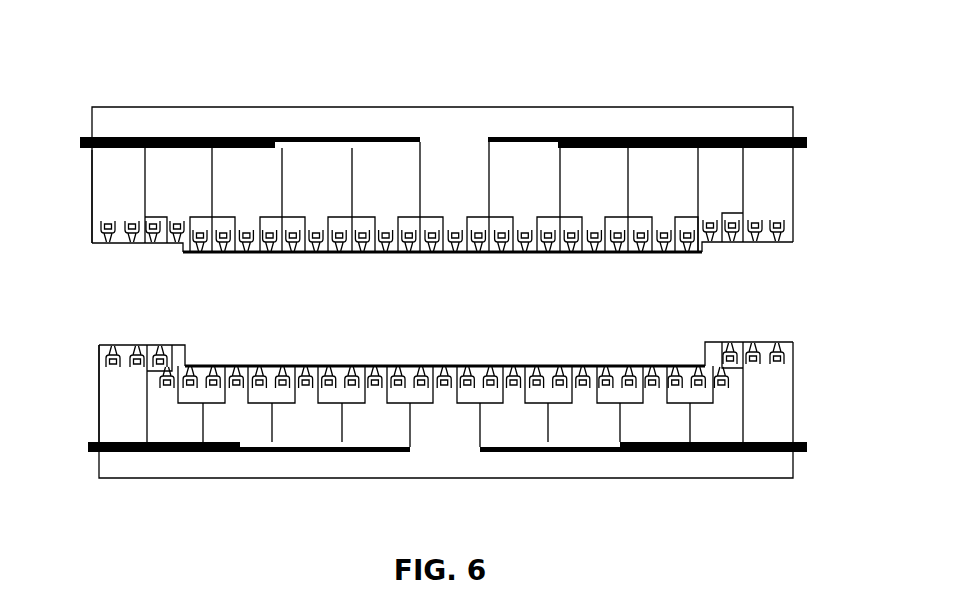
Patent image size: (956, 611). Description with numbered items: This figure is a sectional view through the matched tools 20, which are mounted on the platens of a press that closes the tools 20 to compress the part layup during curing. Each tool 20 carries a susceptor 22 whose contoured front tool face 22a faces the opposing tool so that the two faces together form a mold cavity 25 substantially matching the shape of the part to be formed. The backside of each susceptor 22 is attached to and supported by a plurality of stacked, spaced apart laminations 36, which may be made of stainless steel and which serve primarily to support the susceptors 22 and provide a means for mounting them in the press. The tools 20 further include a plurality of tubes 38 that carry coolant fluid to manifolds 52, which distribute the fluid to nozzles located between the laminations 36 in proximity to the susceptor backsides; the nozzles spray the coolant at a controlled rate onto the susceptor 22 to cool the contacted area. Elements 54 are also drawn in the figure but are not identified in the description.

The matched tools 20 is at (716, 100).
The susceptors 22 is at (258, 270).
The contoured front tool faces 22a is at (313, 262).
The mold cavity 25 is at (676, 332).
The laminations 36 is at (112, 199).
The tubes 38 is at (90, 141).
The manifolds 52 is at (227, 208).
The contact terminals 54 is at (436, 245).